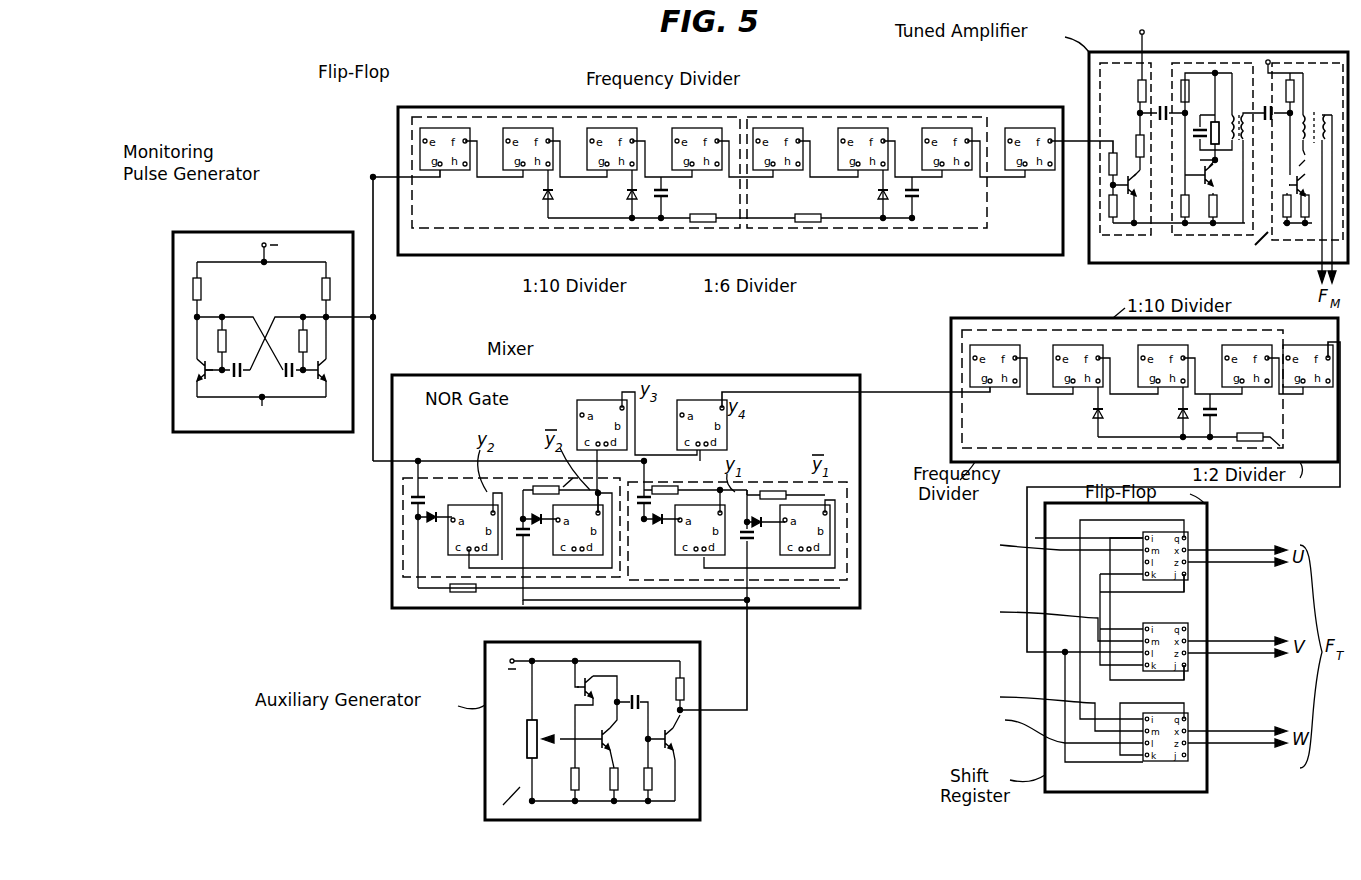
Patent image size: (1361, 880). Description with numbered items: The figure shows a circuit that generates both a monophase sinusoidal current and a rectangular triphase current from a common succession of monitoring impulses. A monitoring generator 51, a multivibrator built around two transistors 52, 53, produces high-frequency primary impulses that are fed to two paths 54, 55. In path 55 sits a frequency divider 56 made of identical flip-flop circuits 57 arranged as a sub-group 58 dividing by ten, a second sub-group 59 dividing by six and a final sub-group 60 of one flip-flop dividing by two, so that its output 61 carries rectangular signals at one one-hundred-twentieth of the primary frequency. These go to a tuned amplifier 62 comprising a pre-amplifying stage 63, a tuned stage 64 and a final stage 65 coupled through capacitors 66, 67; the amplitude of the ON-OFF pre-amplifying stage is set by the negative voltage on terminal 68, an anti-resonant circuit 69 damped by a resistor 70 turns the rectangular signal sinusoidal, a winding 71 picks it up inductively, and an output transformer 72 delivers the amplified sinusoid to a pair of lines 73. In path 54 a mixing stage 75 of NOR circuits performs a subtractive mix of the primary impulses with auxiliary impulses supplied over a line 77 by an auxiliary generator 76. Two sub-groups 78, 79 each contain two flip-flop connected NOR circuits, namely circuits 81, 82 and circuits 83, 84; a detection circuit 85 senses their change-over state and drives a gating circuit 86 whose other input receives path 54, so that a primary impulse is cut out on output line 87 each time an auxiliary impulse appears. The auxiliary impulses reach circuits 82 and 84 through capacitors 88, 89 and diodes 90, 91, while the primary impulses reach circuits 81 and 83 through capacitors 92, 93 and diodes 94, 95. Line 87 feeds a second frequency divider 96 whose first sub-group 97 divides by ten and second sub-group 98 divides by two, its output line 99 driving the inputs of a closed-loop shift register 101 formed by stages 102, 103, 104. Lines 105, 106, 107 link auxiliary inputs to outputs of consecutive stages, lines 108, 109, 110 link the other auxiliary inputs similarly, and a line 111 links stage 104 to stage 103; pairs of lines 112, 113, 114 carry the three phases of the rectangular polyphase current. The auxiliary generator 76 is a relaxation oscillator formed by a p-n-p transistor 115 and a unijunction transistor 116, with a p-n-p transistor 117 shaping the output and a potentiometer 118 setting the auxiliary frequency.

The monitoring generator 51 is at (238, 228).
The transistor 52 is at (218, 385).
The transistor 53 is at (306, 385).
The path 54 is at (373, 461).
The path 55 is at (372, 178).
The frequency divider 56 is at (570, 106).
The flip-flop circuit 57 is at (445, 127).
The sub-group 58 is at (505, 256).
The second sub-group 59 is at (840, 256).
The final sub-group 60 is at (1030, 172).
The output 61 is at (1078, 118).
The tuned amplifier 62 is at (1310, 52).
The pre-amplifying stage 63 is at (1130, 236).
The tuned stage 64 is at (1218, 236).
The final stage 65 is at (1277, 242).
The capacitor 66 is at (1163, 105).
The capacitor 67 is at (1267, 105).
The terminal 68 is at (1140, 31).
The anti-resonant circuit 69 is at (1228, 150).
The damping resistor 70 is at (1212, 120).
The winding 71 is at (1236, 118).
The output transformer 72 is at (1312, 118).
The pair of lines 73 is at (1320, 262).
The mixing stage 75 is at (470, 375).
The auxiliary generator 76 is at (485, 668).
The line 77 is at (748, 662).
The sub-group 78 is at (403, 558).
The sub-group 79 is at (847, 503).
The NOR circuit 81 is at (450, 555).
The NOR circuit 82 is at (580, 600).
The NOR circuit 83 is at (685, 550).
The NOR circuit 84 is at (830, 537).
The NOR circuit 85 is at (576, 407).
The NOR circuit 86 is at (727, 428).
The output line 87 is at (900, 392).
The capacitor 88 is at (520, 485).
The capacitor 89 is at (744, 495).
The diode 90 is at (545, 522).
The diode 91 is at (758, 530).
The capacitor 92 is at (412, 500).
The capacitor 93 is at (655, 518).
The diode 94 is at (430, 523).
The diode 95 is at (672, 545).
The second frequency divider 96 is at (955, 318).
The first sub-group 97 is at (1022, 330).
The second sub-group 98 is at (1318, 395).
The output line 99 is at (1322, 488).
The shift register 101 is at (1045, 740).
The stage 102 is at (1190, 528).
The stage 103 is at (1190, 628).
The stage 104 is at (1190, 718).
The line 105 is at (1125, 545).
The line 106 is at (1190, 683).
The line 107 is at (1058, 538).
The line 108 is at (1058, 617).
The line 109 is at (1063, 706).
The line 110 is at (1190, 592).
The line 111 is at (1063, 724).
The pair of lines 112 is at (1248, 565).
The pair of lines 113 is at (1250, 656).
The pair of lines 114 is at (1248, 746).
The transistor 115 is at (606, 740).
The unijunction transistor 116 is at (578, 688).
The transistor 117 is at (682, 737).
The potentiometer 118 is at (527, 738).